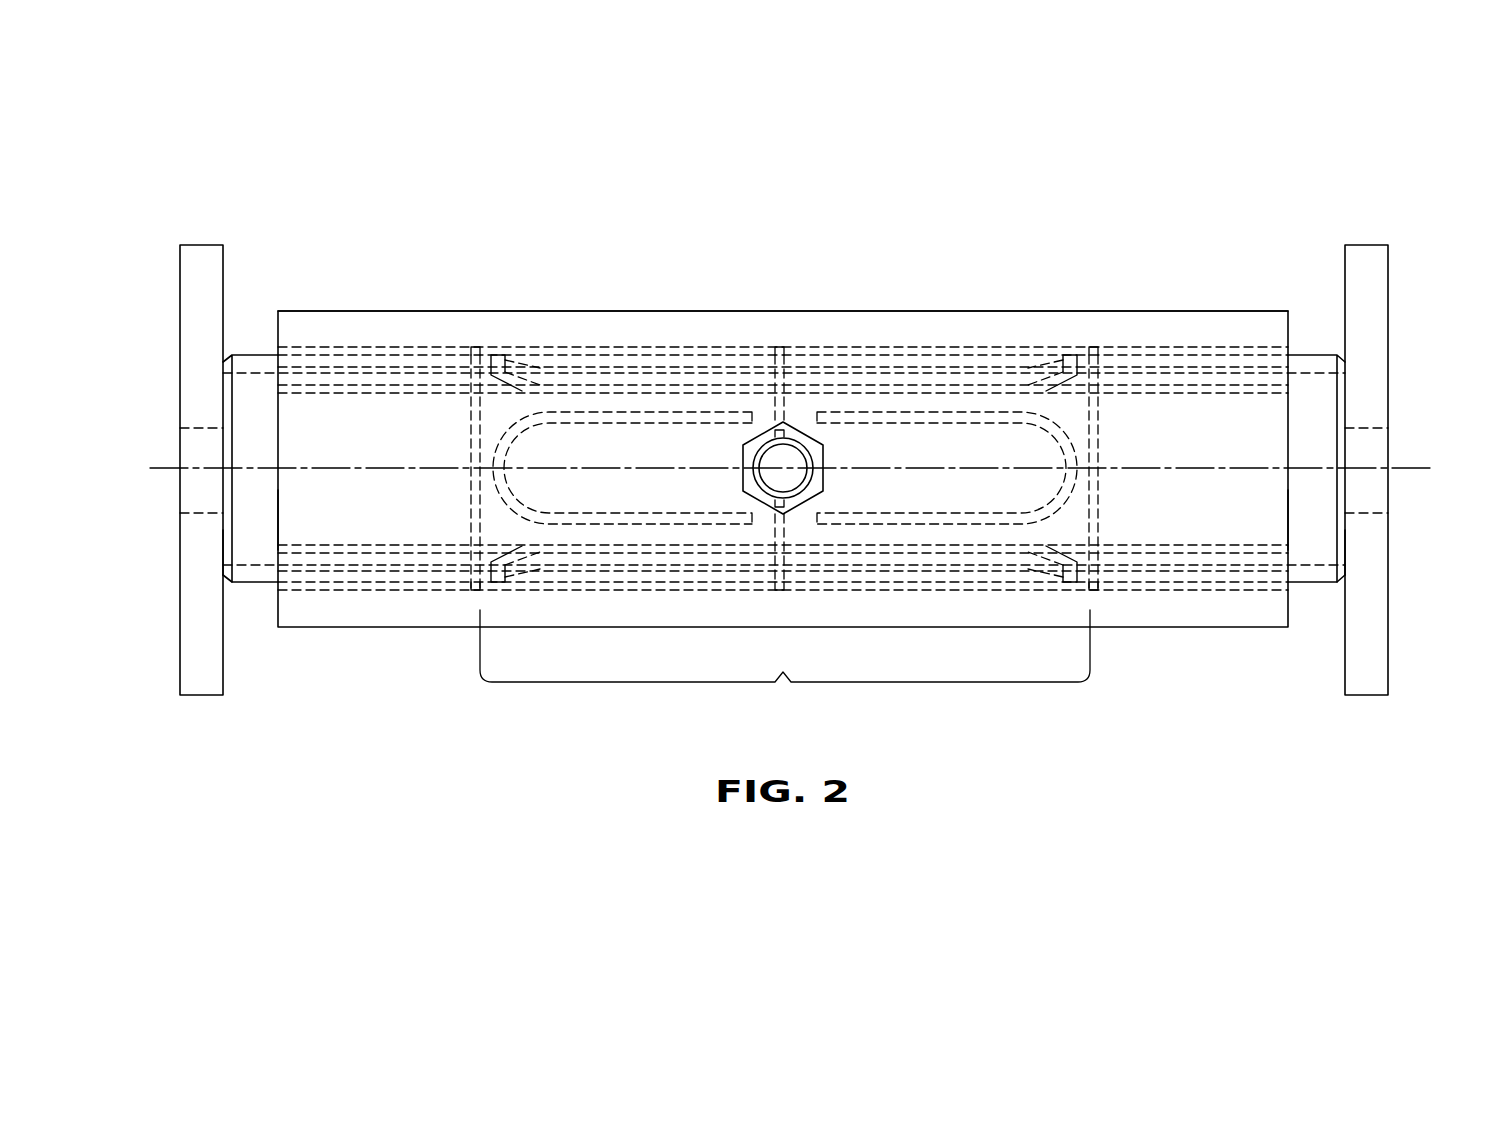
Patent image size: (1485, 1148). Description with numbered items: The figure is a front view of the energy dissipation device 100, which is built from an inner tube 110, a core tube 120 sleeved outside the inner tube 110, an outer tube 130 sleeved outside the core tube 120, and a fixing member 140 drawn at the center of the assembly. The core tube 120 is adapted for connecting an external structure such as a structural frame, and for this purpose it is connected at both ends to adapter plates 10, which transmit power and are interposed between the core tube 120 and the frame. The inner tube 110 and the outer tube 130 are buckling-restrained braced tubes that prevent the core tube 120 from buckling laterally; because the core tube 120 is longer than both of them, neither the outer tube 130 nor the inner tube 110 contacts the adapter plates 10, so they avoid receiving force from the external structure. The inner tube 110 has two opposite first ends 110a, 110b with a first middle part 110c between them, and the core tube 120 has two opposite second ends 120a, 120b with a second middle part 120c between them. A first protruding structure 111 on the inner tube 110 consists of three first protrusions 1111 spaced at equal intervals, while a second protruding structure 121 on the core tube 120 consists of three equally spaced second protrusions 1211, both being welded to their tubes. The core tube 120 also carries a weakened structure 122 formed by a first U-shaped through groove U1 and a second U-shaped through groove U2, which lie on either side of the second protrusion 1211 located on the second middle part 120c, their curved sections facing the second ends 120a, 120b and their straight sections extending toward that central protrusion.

The adapter plate 10 is at (1385, 280).
The energy dissipation device 100 is at (1465, 751).
The inner tube 110 is at (1267, 390).
The core tube 120 is at (1312, 583).
The outer tube 130 is at (1243, 311).
The fixing member 140 is at (778, 460).
The first end 110a is at (1300, 527).
The first end 110b is at (265, 527).
The second end 120a is at (1357, 562).
The second end 120b is at (212, 562).
The first middle part 110c is at (785, 668).
The second middle part 120c is at (785, 668).
The first protruding structure 111 is at (471, 420).
The first protrusion 1111 is at (785, 394).
The second protruding structure 121 is at (785, 394).
The second protrusion 1211 is at (785, 394).
The weakened structure 122 is at (632, 415).
The first U-shaped through groove U1 is at (886, 415).
The second U-shaped through groove U2 is at (622, 389).